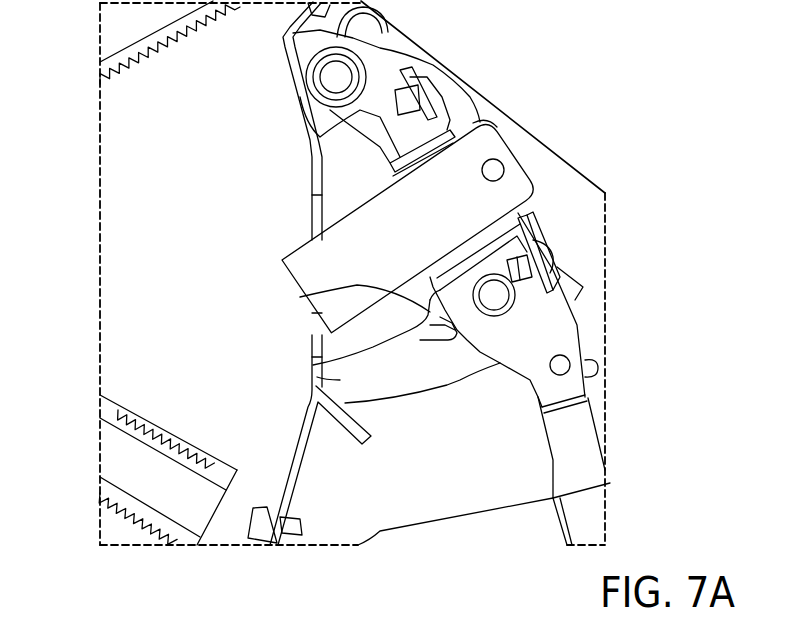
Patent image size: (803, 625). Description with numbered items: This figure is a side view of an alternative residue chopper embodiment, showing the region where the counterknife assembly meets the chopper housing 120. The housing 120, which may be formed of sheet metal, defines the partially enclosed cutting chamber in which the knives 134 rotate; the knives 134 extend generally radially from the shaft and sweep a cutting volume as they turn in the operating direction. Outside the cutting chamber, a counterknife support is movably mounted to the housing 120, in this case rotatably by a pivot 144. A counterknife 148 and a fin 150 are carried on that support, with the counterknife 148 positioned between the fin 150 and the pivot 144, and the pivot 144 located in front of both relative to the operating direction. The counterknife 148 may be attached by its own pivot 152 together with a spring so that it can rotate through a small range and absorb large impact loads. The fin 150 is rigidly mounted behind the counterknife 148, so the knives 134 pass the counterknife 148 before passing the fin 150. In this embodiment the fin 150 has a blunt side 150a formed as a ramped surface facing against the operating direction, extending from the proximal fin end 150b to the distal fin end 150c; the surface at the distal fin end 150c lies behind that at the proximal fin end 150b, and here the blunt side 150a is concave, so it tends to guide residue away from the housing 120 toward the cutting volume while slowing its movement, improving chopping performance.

The housing 120 is at (318, 377).
The knives 134 is at (113, 23).
The pivot 144 is at (338, 78).
The counterknife 148 is at (310, 258).
The fin 150 is at (437, 327).
The blunt side 150a is at (300, 297).
The proximal fin end 150b is at (428, 287).
The distal fin end 150c is at (313, 365).
The pivot 152 is at (493, 170).